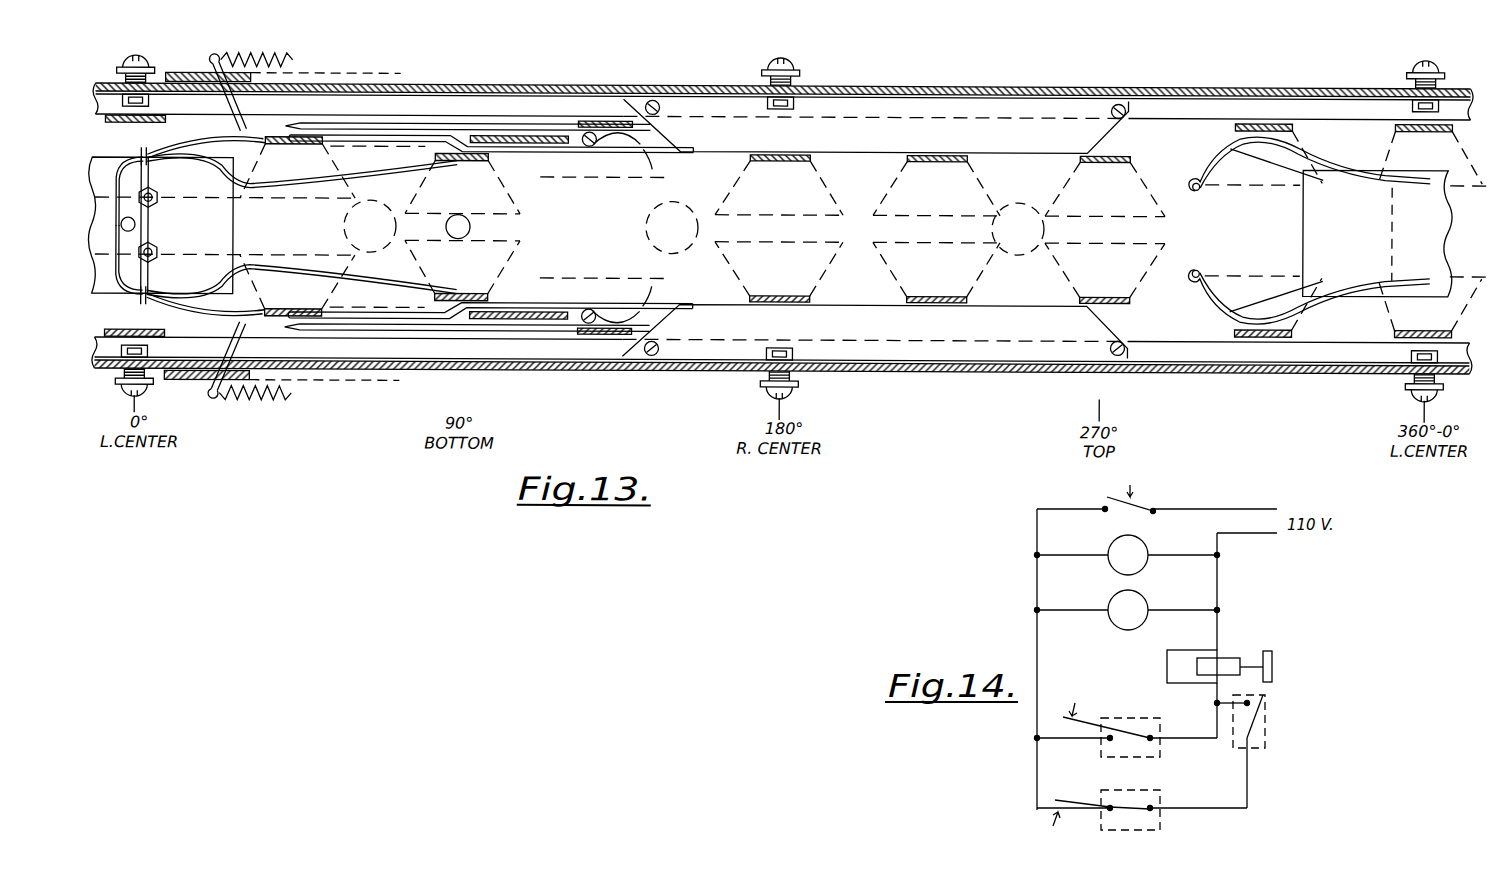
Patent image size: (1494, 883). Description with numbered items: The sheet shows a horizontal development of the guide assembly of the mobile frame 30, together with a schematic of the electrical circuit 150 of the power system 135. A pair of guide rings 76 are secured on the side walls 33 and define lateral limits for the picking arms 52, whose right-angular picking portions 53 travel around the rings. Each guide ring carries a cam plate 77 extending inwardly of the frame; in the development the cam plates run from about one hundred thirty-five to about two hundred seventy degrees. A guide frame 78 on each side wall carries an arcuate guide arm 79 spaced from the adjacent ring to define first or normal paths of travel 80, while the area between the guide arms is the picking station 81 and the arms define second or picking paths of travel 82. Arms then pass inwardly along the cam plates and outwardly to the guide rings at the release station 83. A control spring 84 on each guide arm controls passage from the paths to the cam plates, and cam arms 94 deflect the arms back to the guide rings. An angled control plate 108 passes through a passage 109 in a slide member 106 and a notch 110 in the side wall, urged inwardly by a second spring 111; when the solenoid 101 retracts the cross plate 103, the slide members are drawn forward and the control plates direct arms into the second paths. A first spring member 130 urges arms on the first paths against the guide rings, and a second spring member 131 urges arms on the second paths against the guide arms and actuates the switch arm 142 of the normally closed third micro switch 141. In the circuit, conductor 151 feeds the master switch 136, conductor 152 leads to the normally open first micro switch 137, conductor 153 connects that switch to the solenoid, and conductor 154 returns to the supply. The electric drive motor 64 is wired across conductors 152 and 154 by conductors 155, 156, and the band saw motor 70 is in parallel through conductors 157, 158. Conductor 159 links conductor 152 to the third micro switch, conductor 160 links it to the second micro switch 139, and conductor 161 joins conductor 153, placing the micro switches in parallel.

In FIG. 13, the mobile frame 30 is at (783, 87).
In FIG. 13, the side walls 33 is at (875, 126).
In FIG. 13, the picking arm 52 is at (778, 118).
In FIG. 13, the picking portion 53 is at (898, 231).
In FIG. 13, the guide rings 76 is at (1309, 164).
In FIG. 13, the cam plate 77 is at (792, 172).
In FIG. 13, the guide frame 78 is at (611, 139).
In FIG. 13, the arcuate guide arm 79 is at (491, 144).
In FIG. 13, the first paths of travel 80 is at (467, 127).
In FIG. 13, the picking station 81 is at (486, 232).
In FIG. 13, the second paths of travel 82 is at (365, 165).
In FIG. 13, the release station 83 is at (1160, 229).
In FIG. 13, the control spring 84 is at (647, 159).
In FIG. 13, the cam arms 94 is at (1276, 164).
In FIG. 13, the slide member 106 is at (326, 73).
In FIG. 13, the angled control plate 108 is at (359, 115).
In FIG. 13, the passage 109 is at (228, 92).
In FIG. 13, the notch 110 is at (286, 181).
In FIG. 13, the second spring 111 is at (257, 60).
In FIG. 13, the first spring member 130 is at (225, 262).
In FIG. 13, the second spring member 131 is at (335, 270).
In FIG. 14, the electrical circuit 150 is at (1027, 569).
In FIG. 14, the electrical conductor 152 is at (1065, 509).
In FIG. 14, the master switch 136 is at (1145, 505).
In FIG. 14, the electrical conductor 151 is at (1228, 509).
In FIG. 14, the electrical conductor 154 is at (1237, 535).
In FIG. 14, the electric drive motor 64 is at (1135, 538).
In FIG. 14, the conductor 155 is at (1092, 553).
In FIG. 14, the conductor 156 is at (1198, 557).
In FIG. 14, the band saw motor 70 is at (1113, 597).
In FIG. 14, the conductor 157 is at (1090, 614).
In FIG. 14, the conductor 158 is at (1190, 612).
In FIG. 14, the solenoid 101 is at (1190, 677).
In FIG. 14, the cross plate 103 is at (1274, 667).
In FIG. 14, the electrical conductor 161 is at (1258, 658).
In FIG. 14, the power system 135 is at (1260, 635).
In FIG. 14, the second micro switch 139 is at (1265, 748).
In FIG. 14, the first micro switch 137 is at (1133, 718).
In FIG. 14, the electrical conductor 153 is at (1185, 740).
In FIG. 14, the electrical conductor 159 is at (1037, 768).
In FIG. 14, the switch arm 142 is at (1062, 800).
In FIG. 14, the electrical conductor 160 is at (1225, 808).
In FIG. 14, the third micro switch 141 is at (1160, 830).